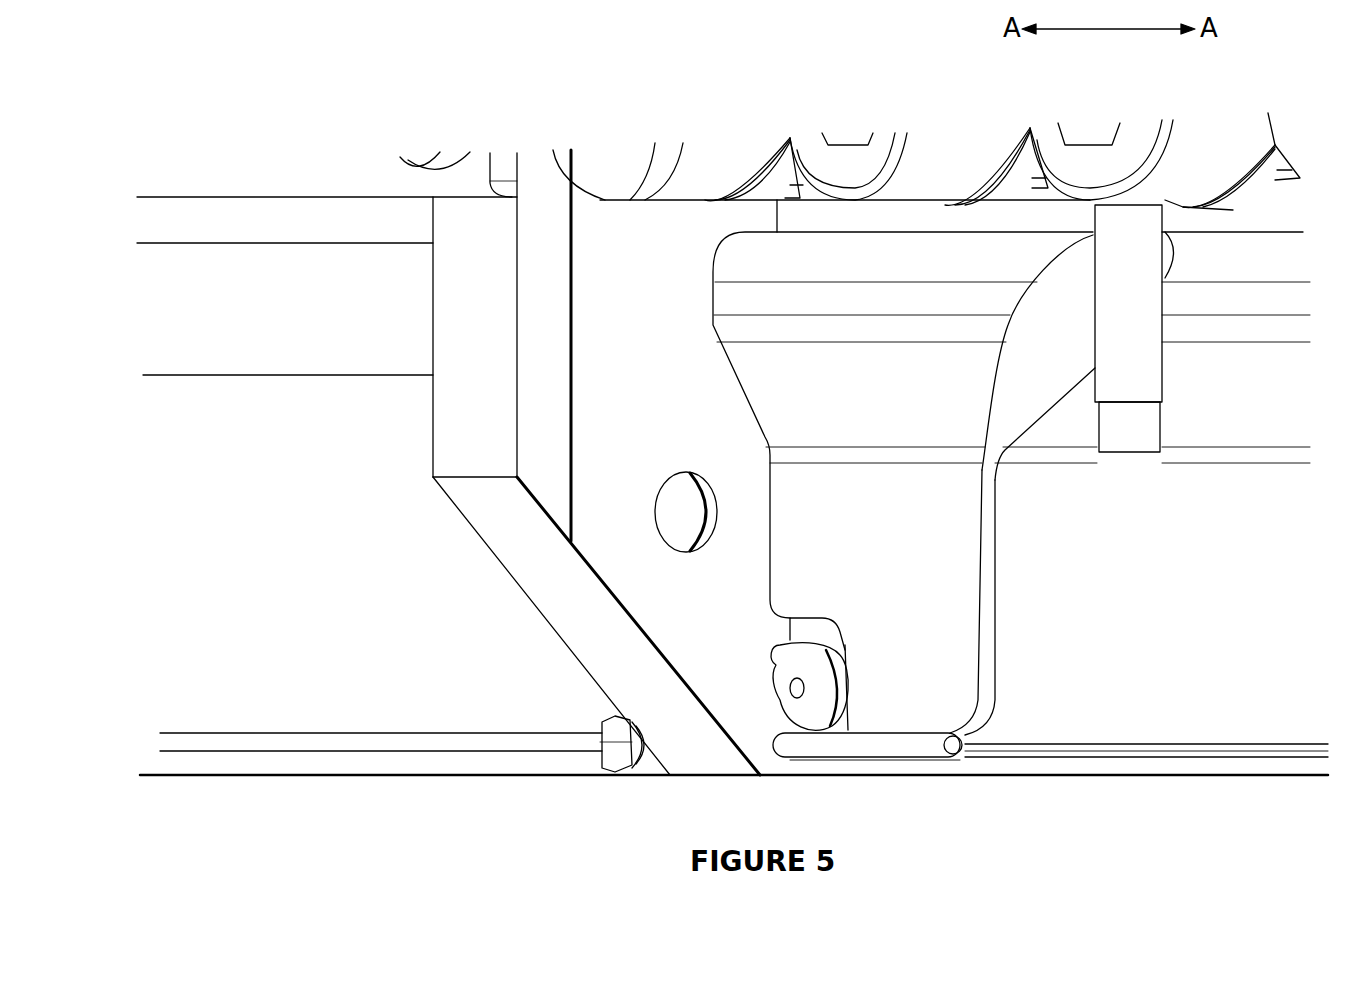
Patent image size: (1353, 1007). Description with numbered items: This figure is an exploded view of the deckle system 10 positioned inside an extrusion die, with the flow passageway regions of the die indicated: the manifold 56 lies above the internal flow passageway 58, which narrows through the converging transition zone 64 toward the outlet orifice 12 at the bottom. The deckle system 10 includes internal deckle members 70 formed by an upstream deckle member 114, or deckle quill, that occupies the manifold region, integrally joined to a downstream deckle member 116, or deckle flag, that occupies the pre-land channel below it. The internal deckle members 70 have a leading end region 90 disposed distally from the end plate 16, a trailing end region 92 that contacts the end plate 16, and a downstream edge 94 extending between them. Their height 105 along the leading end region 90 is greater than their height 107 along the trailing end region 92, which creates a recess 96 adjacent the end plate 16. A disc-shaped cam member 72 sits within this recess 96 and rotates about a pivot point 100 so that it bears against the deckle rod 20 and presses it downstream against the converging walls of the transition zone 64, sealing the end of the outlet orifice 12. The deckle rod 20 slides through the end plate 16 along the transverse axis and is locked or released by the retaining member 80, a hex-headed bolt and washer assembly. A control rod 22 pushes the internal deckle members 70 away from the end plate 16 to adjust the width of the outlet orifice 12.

The deckle system 10 is at (694, 795).
The outlet orifice 12 is at (1160, 780).
The end plate 16 is at (540, 555).
The deckle rod 20 is at (912, 758).
The control rod 22 is at (330, 325).
The manifold 56 is at (1262, 235).
The internal flow passageway 58 is at (1238, 465).
The transition zone 64 is at (1010, 745).
The internal deckle members 70 is at (1015, 595).
The cam member 72 is at (812, 718).
The retaining member 80 is at (628, 760).
The leading end region 90 is at (996, 533).
The trailing end region 92 is at (773, 534).
The downstream edge 94 is at (963, 738).
The recess 96 is at (843, 627).
The pivot point 100 is at (797, 700).
The height along the leading end region 105 is at (947, 240).
The height along the trailing end region 107 is at (857, 603).
The upstream deckle member 114 is at (1084, 313).
The downstream deckle member 116 is at (982, 493).